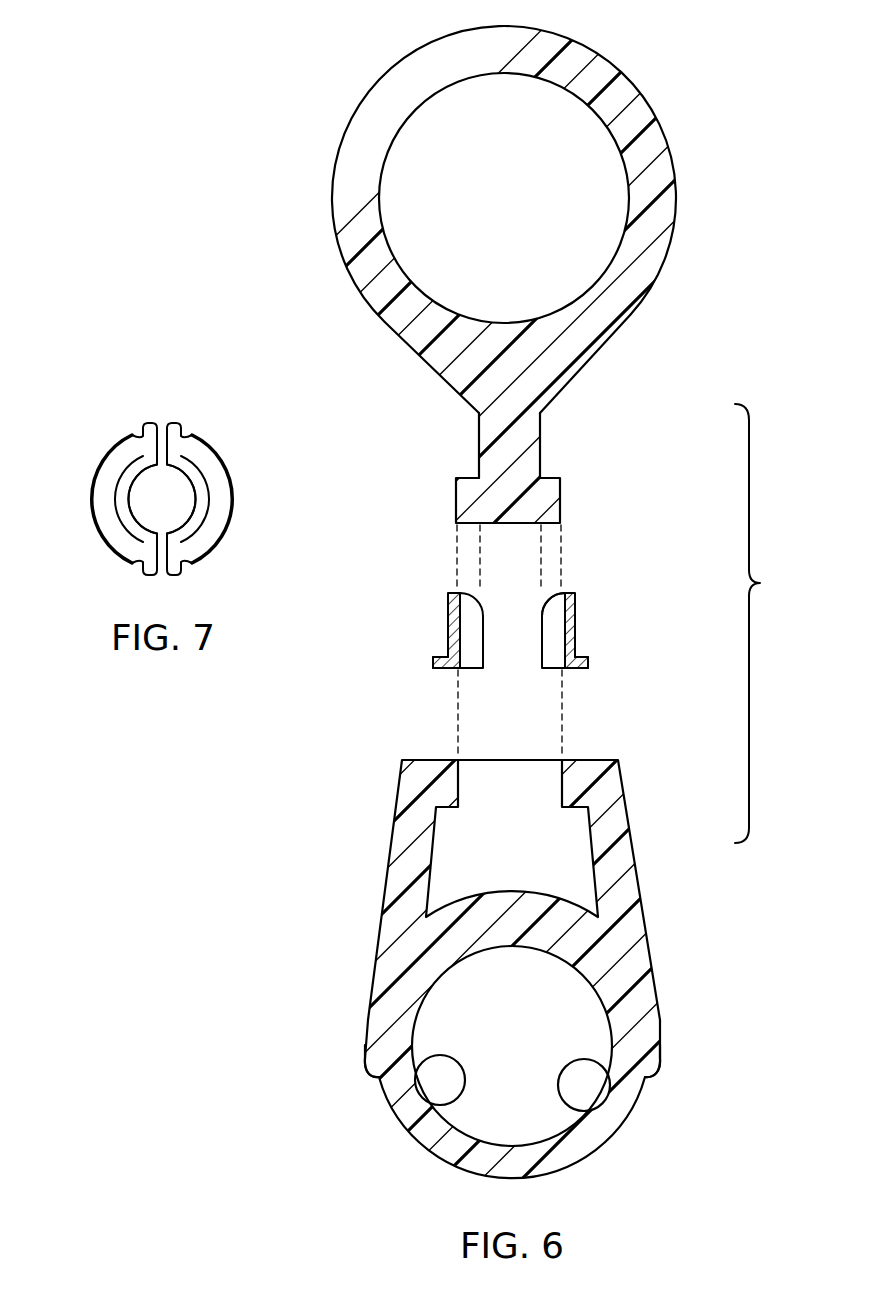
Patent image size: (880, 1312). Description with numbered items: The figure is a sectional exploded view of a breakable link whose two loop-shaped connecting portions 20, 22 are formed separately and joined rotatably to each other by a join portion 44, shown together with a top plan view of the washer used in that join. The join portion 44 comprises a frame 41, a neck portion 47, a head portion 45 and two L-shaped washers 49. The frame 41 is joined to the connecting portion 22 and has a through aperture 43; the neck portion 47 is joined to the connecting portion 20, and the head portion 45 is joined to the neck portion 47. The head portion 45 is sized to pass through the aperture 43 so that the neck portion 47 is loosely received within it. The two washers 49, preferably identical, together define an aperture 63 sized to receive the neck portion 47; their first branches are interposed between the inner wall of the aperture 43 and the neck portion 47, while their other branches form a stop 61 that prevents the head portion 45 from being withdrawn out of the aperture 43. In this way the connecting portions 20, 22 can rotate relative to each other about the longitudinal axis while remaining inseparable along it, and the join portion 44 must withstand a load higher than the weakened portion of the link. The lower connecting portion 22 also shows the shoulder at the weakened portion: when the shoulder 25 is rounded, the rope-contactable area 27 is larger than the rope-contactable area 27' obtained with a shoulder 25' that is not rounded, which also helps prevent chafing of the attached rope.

In FIG. 6, the loop-shaped connecting portion 20 is at (600, 187).
In FIG. 6, the loop-shaped connecting portion 22 is at (557, 1010).
In FIG. 6, the rounded shoulder 25 is at (338, 1074).
In FIG. 6, the non-rounded shoulder 25' is at (671, 1067).
In FIG. 6, the rope-contactable area 27 is at (399, 1106).
In FIG. 6, the rope-contactable area 27' is at (629, 1118).
In FIG. 6, the frame 41 is at (619, 841).
In FIG. 6, the through aperture 43 is at (497, 767).
In FIG. 6, the join portion 44 is at (763, 623).
In FIG. 6, the head portion 45 is at (552, 500).
In FIG. 6, the neck portion 47 is at (530, 446).
In FIG. 6, the L-shaped washer 49 is at (574, 631).
In FIG. 7, the L-shaped washer 49 is at (115, 512).
In FIG. 6, the stop 61 is at (587, 662).
In FIG. 7, the stop 61 is at (103, 458).
In FIG. 6, the aperture 63 is at (548, 611).
In FIG. 7, the aperture 63 is at (152, 477).